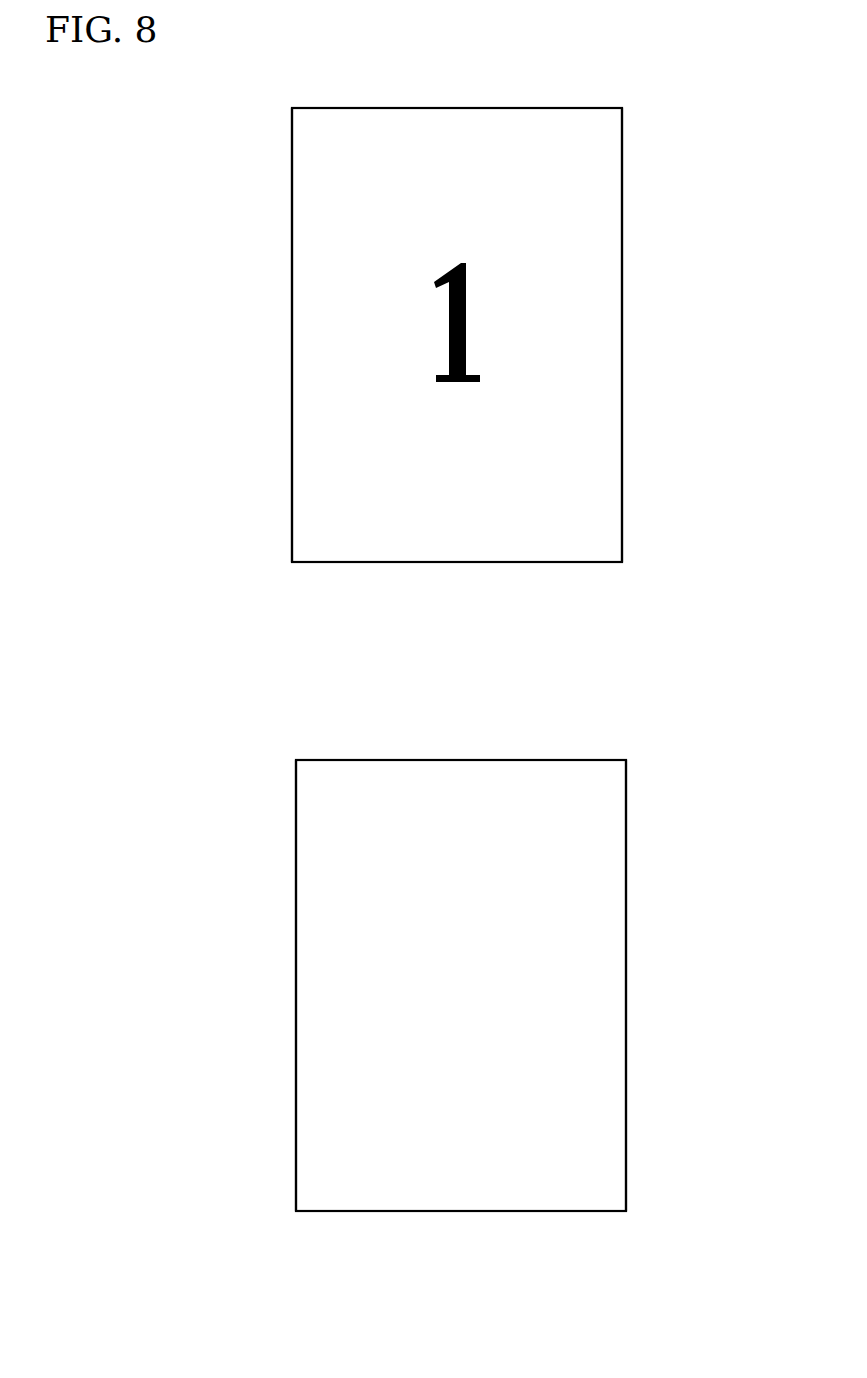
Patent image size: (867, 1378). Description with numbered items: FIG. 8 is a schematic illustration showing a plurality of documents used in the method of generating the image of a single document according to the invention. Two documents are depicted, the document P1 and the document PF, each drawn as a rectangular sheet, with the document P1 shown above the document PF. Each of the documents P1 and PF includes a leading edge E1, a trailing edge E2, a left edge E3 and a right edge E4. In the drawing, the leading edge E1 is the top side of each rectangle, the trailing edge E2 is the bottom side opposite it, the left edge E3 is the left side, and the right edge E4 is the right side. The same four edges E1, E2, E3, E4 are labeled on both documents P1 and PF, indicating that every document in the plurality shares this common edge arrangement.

The leading edge E1 is at (457, 108).
The trailing edge E2 is at (460, 562).
The left edge E3 is at (292, 338).
The right edge E4 is at (622, 238).
The document P1 is at (607, 343).
The document PF is at (611, 997).